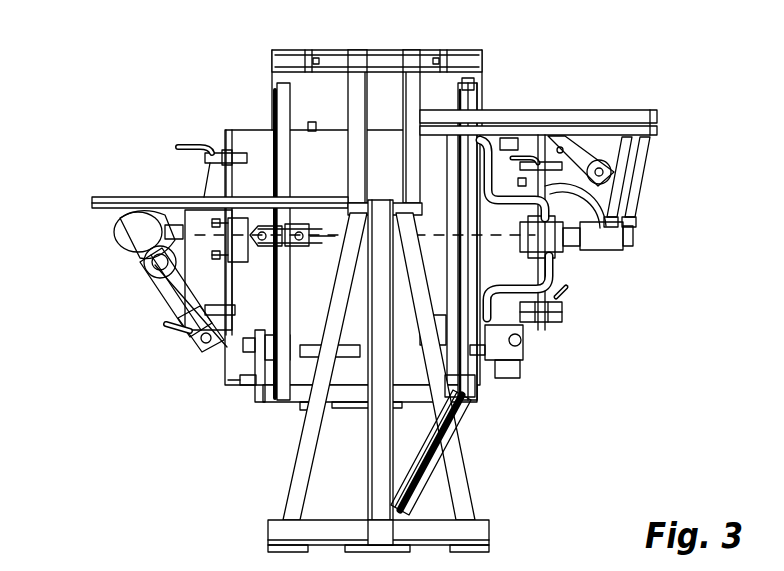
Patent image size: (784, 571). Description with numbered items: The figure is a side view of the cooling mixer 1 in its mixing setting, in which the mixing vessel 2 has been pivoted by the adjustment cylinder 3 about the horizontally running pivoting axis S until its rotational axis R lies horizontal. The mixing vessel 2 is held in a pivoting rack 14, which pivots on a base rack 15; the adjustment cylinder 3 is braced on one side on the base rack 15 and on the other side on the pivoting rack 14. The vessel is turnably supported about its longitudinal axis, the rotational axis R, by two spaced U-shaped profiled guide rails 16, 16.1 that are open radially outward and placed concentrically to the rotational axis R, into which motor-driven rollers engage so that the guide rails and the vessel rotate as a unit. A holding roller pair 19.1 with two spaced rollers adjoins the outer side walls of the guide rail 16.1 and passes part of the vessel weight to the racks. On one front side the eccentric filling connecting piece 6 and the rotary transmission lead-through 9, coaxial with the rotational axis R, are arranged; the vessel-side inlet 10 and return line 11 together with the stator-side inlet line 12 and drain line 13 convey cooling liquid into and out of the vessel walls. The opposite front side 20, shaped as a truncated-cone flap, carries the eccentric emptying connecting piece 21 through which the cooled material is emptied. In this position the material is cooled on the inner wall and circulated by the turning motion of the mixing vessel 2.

The cooling mixer 1 is at (100, 125).
The mixing vessel 2 is at (449, 201).
The adjustment cylinder 3 is at (466, 406).
The filling connecting piece 6 is at (546, 270).
The rotary transmission lead-through 9 is at (603, 244).
The vessel-side inlet 10 is at (515, 192).
The return line 11 is at (536, 326).
The inlet line 12 is at (647, 205).
The drain line 13 is at (640, 167).
The pivoting rack 14 is at (262, 78).
The base rack 15 is at (286, 462).
The guide rail 16 is at (462, 175).
The guide rail 16.1 is at (287, 148).
The holding roller pair 19.1 is at (308, 256).
The front side 20 is at (205, 190).
The emptying connecting piece 21 is at (182, 306).
The rotational axis R is at (150, 232).
The pivoting axis S is at (378, 232).